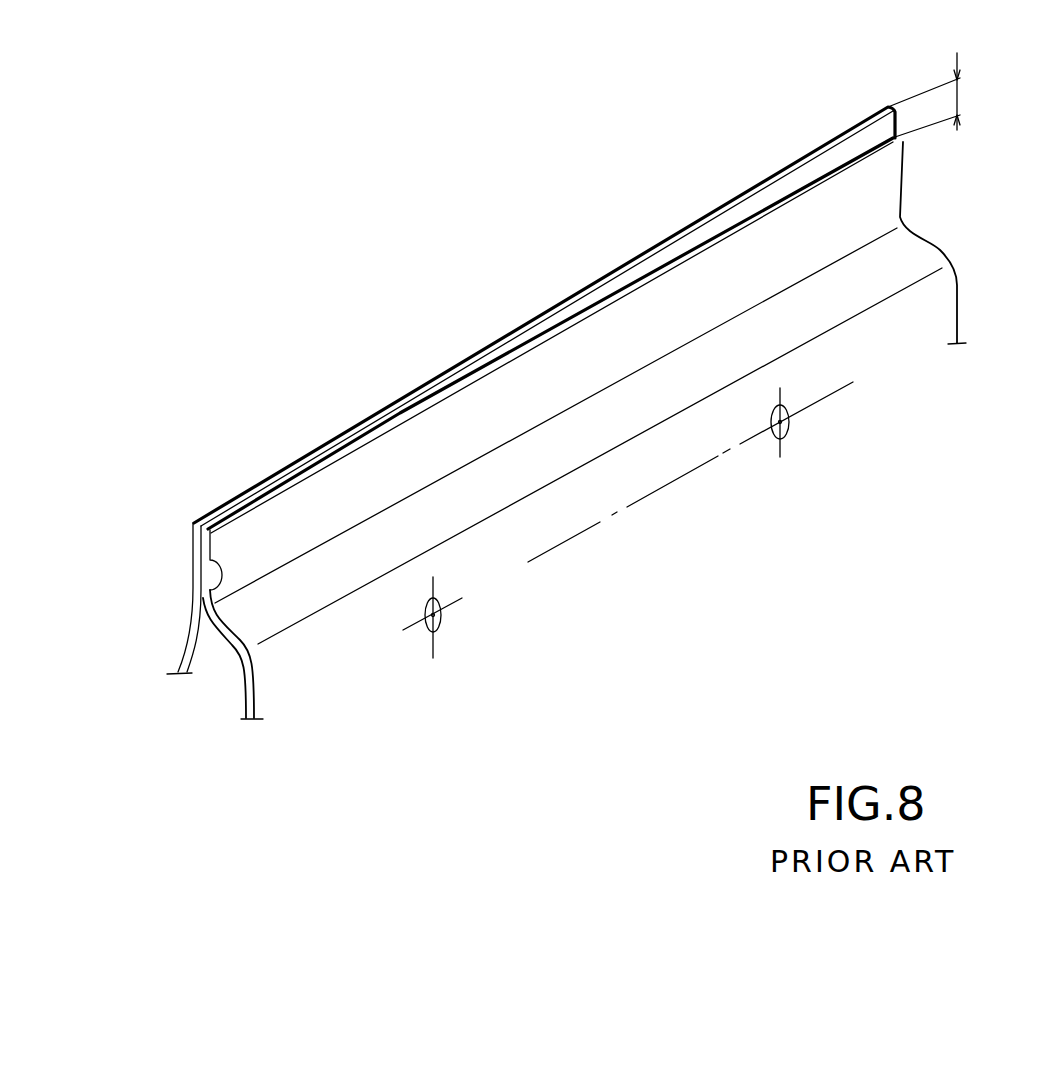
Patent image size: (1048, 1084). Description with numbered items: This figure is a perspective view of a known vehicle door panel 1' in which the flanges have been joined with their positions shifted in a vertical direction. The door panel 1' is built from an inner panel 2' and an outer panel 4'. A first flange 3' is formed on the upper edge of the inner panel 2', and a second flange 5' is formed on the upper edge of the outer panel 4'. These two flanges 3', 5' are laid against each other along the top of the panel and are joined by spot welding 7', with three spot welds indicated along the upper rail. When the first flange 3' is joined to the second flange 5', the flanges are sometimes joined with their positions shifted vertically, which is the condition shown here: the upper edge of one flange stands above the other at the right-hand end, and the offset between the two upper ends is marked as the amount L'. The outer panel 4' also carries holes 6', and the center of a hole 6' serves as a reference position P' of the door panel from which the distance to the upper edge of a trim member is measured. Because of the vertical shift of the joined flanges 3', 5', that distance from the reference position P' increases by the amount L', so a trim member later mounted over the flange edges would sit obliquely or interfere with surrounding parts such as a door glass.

The door panel 1' is at (609, 375).
The inner panel 2' is at (143, 647).
The first flange 3' is at (159, 593).
The outer panel 4' is at (220, 674).
The second flange 5' is at (156, 567).
The hole 6' is at (634, 502).
The spot welding 7' is at (520, 314).
The reference position P' is at (638, 545).
The amount of shift L' is at (967, 95).